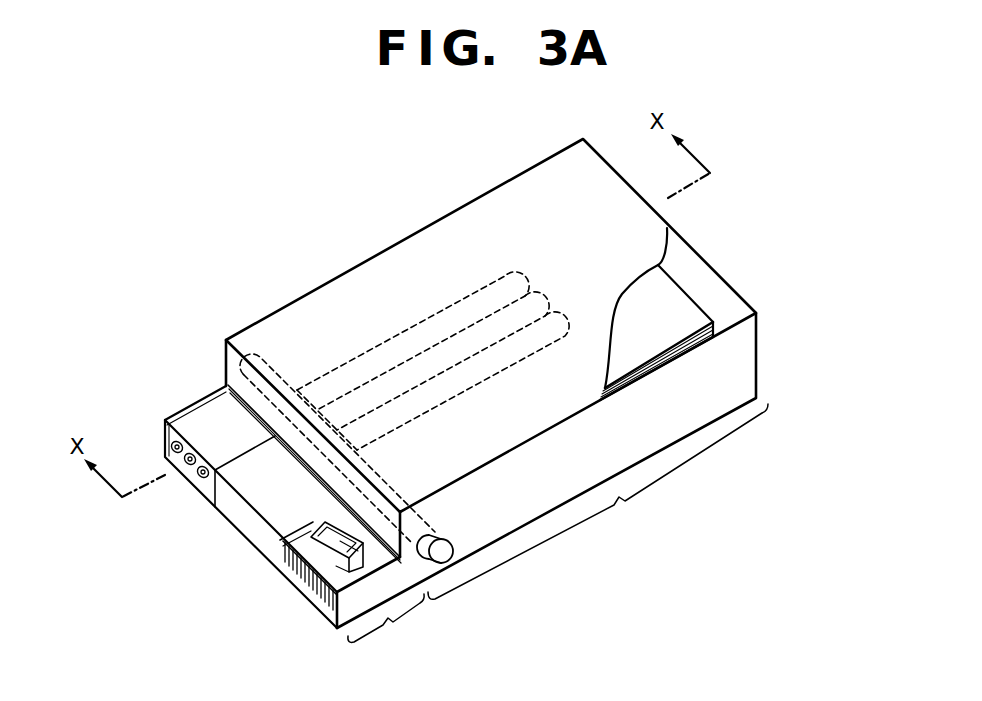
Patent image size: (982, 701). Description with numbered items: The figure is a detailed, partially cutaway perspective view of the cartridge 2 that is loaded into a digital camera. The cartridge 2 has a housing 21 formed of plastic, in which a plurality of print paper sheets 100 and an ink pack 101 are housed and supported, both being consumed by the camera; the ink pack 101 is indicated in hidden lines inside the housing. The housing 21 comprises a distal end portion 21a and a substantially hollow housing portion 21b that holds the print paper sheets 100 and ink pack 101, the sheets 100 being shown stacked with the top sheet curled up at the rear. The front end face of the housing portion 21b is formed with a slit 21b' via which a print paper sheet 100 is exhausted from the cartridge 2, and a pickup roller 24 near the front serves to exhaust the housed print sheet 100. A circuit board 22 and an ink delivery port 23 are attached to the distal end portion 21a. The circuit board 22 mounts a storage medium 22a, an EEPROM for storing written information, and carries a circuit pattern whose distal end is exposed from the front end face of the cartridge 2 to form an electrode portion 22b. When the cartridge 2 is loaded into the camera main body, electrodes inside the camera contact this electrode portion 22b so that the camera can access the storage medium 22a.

The cartridge 2 is at (683, 493).
The housing 21 is at (757, 362).
The distal end portion 21a is at (311, 533).
The housing portion 21b is at (552, 470).
The slit 21b' is at (308, 408).
The circuit board 22 is at (297, 518).
The storage medium 22a is at (307, 527).
The electrode portion 22b is at (294, 580).
The ink delivery port 23 is at (193, 420).
The pickup roller 24 is at (442, 556).
The print paper sheets 100 is at (685, 290).
The ink pack 101 is at (368, 351).